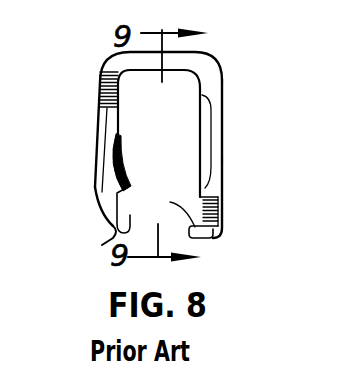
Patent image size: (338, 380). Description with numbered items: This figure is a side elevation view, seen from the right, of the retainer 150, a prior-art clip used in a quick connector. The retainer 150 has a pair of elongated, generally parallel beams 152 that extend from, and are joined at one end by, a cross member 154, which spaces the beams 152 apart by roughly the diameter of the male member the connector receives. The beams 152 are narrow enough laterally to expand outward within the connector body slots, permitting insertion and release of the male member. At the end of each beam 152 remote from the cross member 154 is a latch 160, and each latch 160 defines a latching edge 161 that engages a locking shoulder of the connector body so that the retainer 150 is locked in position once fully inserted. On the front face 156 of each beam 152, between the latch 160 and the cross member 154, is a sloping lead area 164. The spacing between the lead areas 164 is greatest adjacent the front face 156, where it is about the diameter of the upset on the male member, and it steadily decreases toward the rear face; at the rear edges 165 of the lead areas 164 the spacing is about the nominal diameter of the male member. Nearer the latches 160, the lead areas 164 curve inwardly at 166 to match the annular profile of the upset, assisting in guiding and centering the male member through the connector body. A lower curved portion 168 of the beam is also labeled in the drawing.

The prior art clip 150 is at (241, 86).
The side walls 152 is at (100, 102).
The top wall 154 is at (200, 55).
The outer wall 156 is at (219, 168).
The feet 160 is at (104, 243).
The notch 161 is at (140, 199).
The ribs 164 is at (110, 137).
The inner cavity 165 is at (200, 117).
The ramp 166 is at (198, 185).
The lower curved portion 168 is at (97, 206).